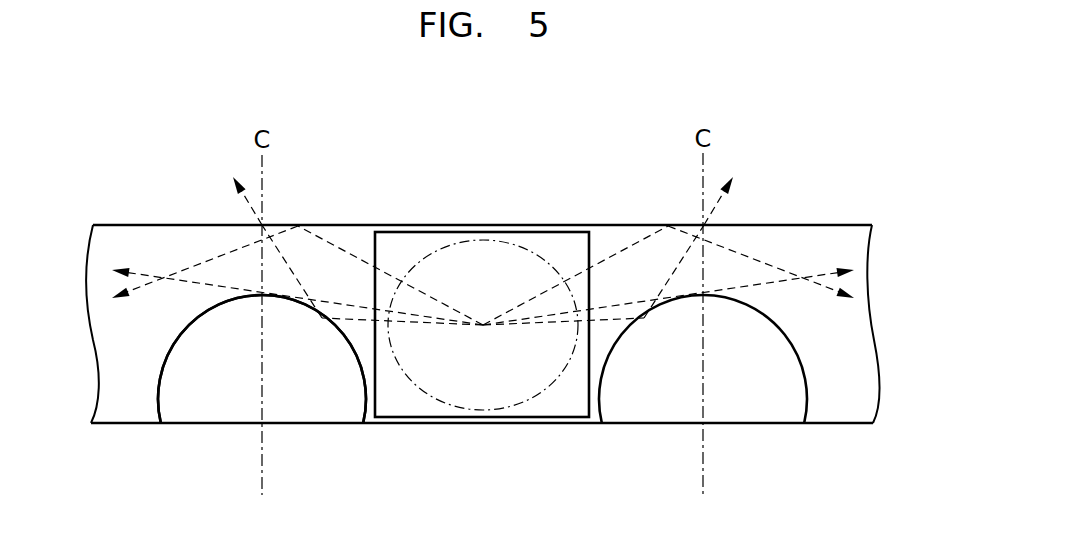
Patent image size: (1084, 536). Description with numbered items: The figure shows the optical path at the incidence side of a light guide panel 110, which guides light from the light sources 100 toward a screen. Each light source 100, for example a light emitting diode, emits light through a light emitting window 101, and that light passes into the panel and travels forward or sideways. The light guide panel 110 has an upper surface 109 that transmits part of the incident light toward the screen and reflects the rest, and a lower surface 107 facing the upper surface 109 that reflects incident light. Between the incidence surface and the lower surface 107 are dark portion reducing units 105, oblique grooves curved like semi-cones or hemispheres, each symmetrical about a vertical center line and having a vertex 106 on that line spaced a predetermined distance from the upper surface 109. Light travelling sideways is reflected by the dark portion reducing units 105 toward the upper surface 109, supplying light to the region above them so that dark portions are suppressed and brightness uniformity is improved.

The light source 100 is at (553, 232).
The light emitting window 101 is at (532, 398).
The dark portion reducing unit 105 is at (348, 358).
The vertex 106 is at (262, 294).
The lower surface 107 is at (835, 423).
The upper surface 109 is at (836, 225).
The light guide panel 110 is at (489, 293).